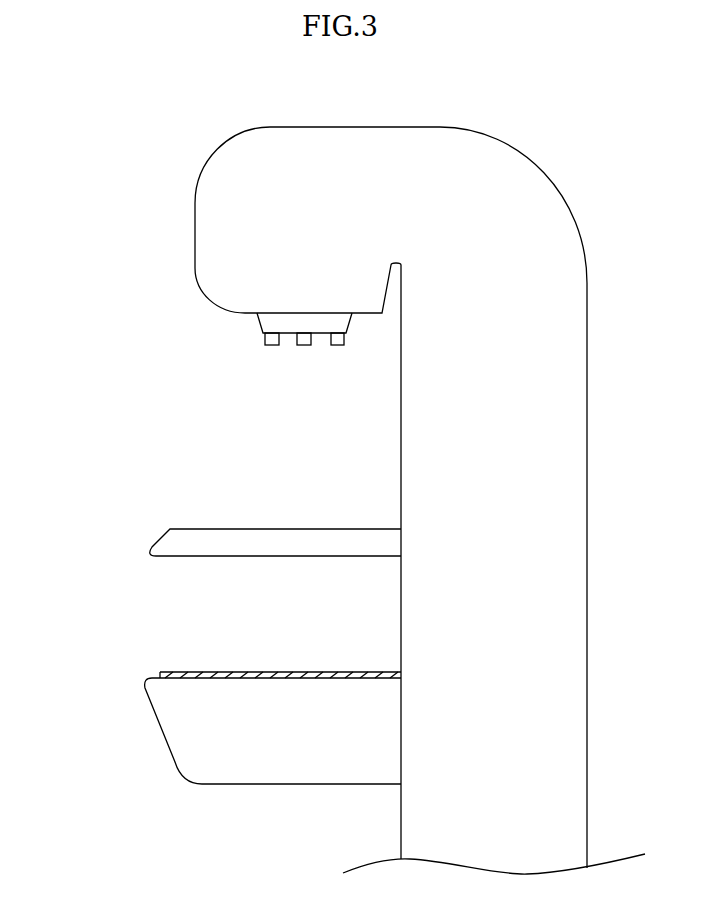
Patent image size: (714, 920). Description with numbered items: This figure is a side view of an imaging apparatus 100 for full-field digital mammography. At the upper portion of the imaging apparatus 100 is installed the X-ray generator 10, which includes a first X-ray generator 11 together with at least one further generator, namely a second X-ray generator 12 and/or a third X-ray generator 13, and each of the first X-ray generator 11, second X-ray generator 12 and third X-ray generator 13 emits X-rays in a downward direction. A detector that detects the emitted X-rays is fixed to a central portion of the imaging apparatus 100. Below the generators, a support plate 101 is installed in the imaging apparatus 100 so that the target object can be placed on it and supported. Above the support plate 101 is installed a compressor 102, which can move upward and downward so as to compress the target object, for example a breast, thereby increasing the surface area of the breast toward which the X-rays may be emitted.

The imaging apparatus 100 is at (143, 181).
The X-ray generator 10 is at (255, 364).
The first X-ray generator 11 is at (305, 346).
The second X-ray generator 12 is at (272, 346).
The third X-ray generator 13 is at (338, 346).
The support plate 101 is at (160, 700).
The compressor 102 is at (170, 538).